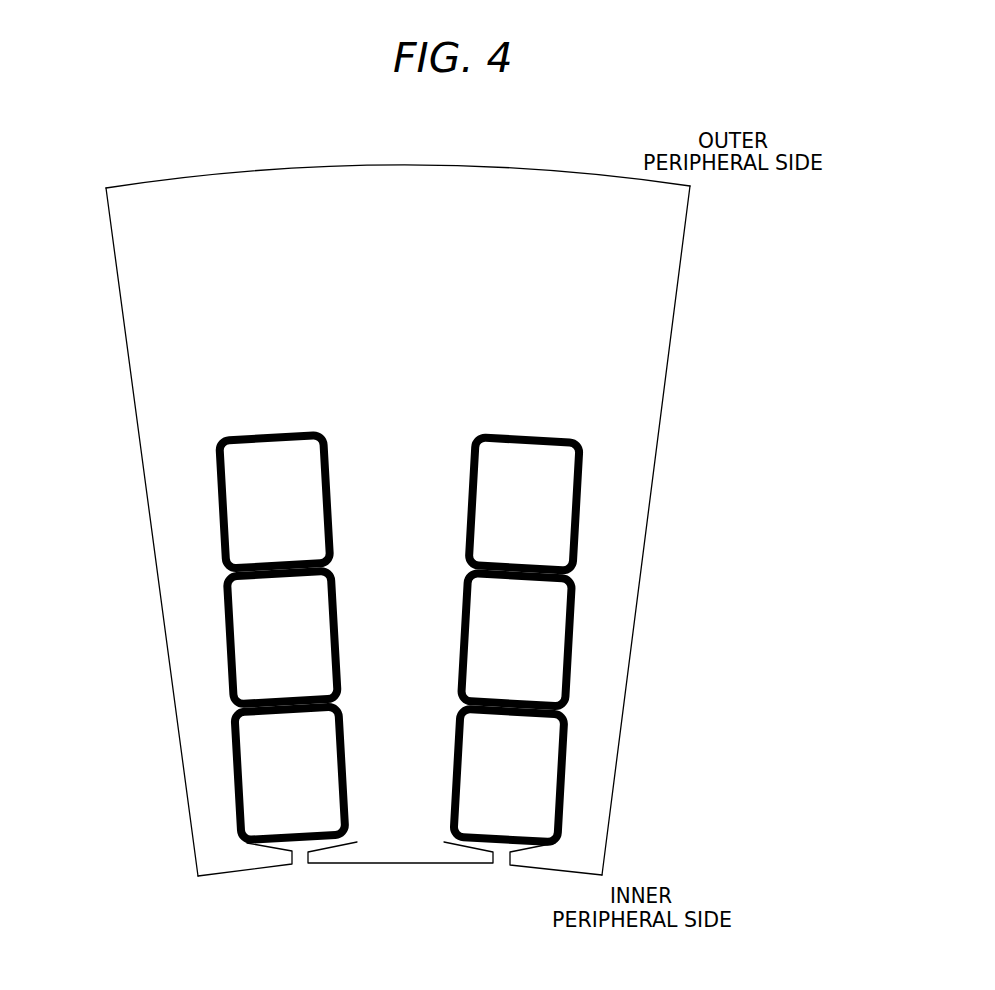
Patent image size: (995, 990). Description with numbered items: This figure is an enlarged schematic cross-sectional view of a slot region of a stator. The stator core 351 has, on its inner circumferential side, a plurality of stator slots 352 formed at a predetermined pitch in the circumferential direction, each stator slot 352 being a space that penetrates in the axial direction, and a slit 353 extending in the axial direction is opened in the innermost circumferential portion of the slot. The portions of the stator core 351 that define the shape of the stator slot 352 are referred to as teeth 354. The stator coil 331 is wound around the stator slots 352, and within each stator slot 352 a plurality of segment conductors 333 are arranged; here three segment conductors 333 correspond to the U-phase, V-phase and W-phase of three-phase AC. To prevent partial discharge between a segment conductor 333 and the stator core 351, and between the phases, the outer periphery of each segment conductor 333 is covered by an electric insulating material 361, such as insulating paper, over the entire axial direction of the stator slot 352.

The stator coil 331 is at (646, 639).
The segment conductor 333 is at (550, 502).
The stator core 351 is at (663, 270).
The stator slot 352 is at (297, 848).
The slit 353 is at (500, 853).
The teeth 354 is at (400, 822).
The electric insulating material 361 is at (232, 572).